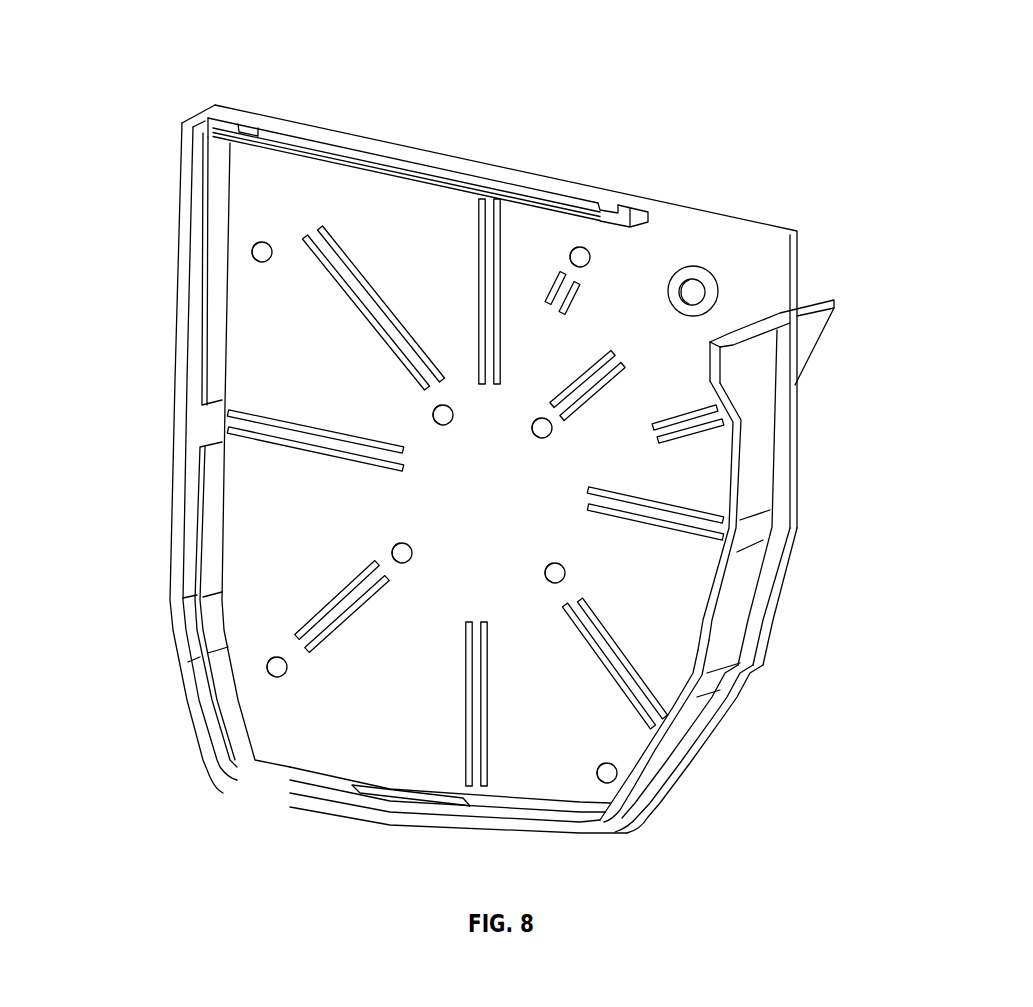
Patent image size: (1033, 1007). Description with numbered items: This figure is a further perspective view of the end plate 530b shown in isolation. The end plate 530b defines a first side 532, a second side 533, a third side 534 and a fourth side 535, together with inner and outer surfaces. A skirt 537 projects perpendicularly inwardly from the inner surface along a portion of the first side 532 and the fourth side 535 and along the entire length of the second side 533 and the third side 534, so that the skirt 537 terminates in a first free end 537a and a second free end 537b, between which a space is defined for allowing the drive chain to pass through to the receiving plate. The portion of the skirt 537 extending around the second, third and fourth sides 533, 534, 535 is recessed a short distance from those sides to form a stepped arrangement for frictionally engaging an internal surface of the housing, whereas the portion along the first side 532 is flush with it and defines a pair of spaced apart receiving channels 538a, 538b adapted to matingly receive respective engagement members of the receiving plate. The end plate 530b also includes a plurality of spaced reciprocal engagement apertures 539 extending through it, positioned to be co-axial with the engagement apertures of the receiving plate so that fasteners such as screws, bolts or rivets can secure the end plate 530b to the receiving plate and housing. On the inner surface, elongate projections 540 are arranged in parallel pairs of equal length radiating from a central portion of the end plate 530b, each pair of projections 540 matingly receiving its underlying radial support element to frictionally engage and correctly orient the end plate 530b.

The end plate 530b is at (212, 908).
The first side 532 is at (507, 165).
The second side 533 is at (180, 400).
The third side 534 is at (388, 826).
The fourth side 535 is at (770, 592).
The skirt 537 is at (710, 690).
The first free end 537a is at (655, 205).
The second free end 537b is at (760, 330).
The receiving channel 538a is at (615, 198).
The receiving channel 538b is at (250, 128).
The reciprocal engagement aperture 539 is at (395, 557).
The projections 540 is at (480, 790).